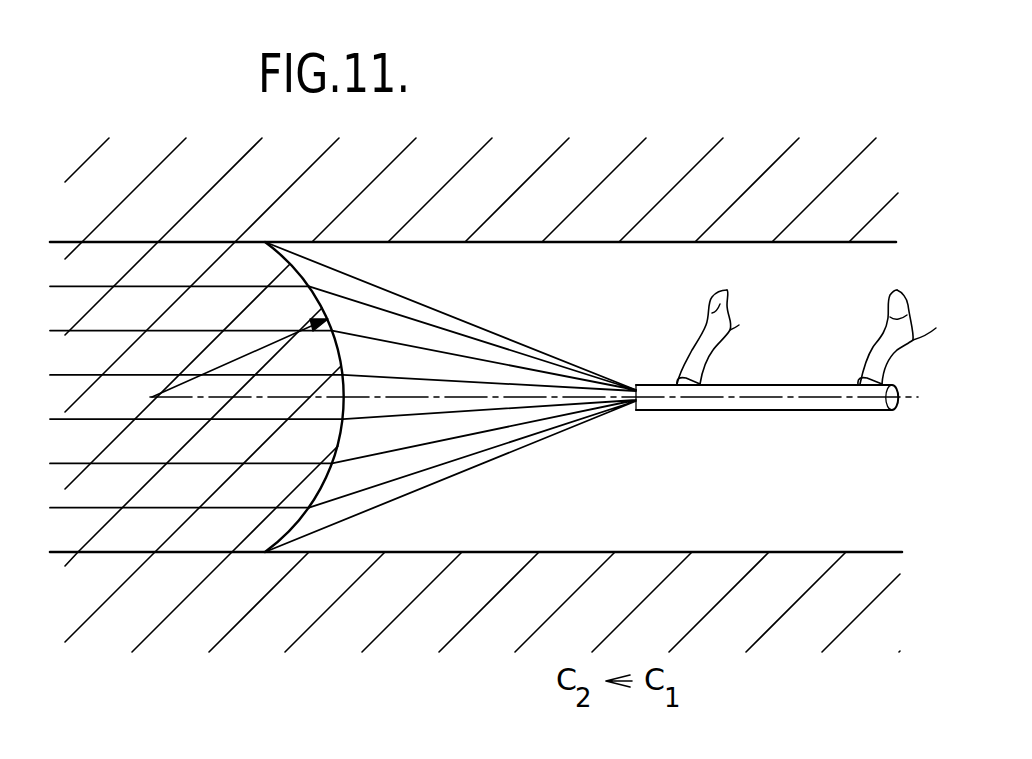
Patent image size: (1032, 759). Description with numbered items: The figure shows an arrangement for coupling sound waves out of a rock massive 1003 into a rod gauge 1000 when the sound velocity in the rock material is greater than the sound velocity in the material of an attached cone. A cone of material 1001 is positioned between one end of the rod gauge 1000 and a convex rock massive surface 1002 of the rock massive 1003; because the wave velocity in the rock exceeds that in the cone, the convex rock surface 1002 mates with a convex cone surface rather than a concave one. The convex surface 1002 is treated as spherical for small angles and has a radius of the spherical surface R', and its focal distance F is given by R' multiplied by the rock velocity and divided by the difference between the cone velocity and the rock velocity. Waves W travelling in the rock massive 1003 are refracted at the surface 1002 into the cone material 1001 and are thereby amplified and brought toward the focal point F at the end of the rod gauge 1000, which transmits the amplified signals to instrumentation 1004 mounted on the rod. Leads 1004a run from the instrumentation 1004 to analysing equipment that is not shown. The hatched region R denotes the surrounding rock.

The rod gauge 1000 is at (794, 403).
The cone of material 1001 is at (495, 341).
The convex rock massive surface 1002 is at (343, 306).
The rock massive 1003 is at (523, 593).
The instrumentation 1004 is at (860, 360).
The leads 1004a is at (895, 293).
The focal distance F is at (534, 424).
The waves W is at (196, 376).
The wall region R is at (369, 601).
The radius of the spherical surface R' is at (240, 343).